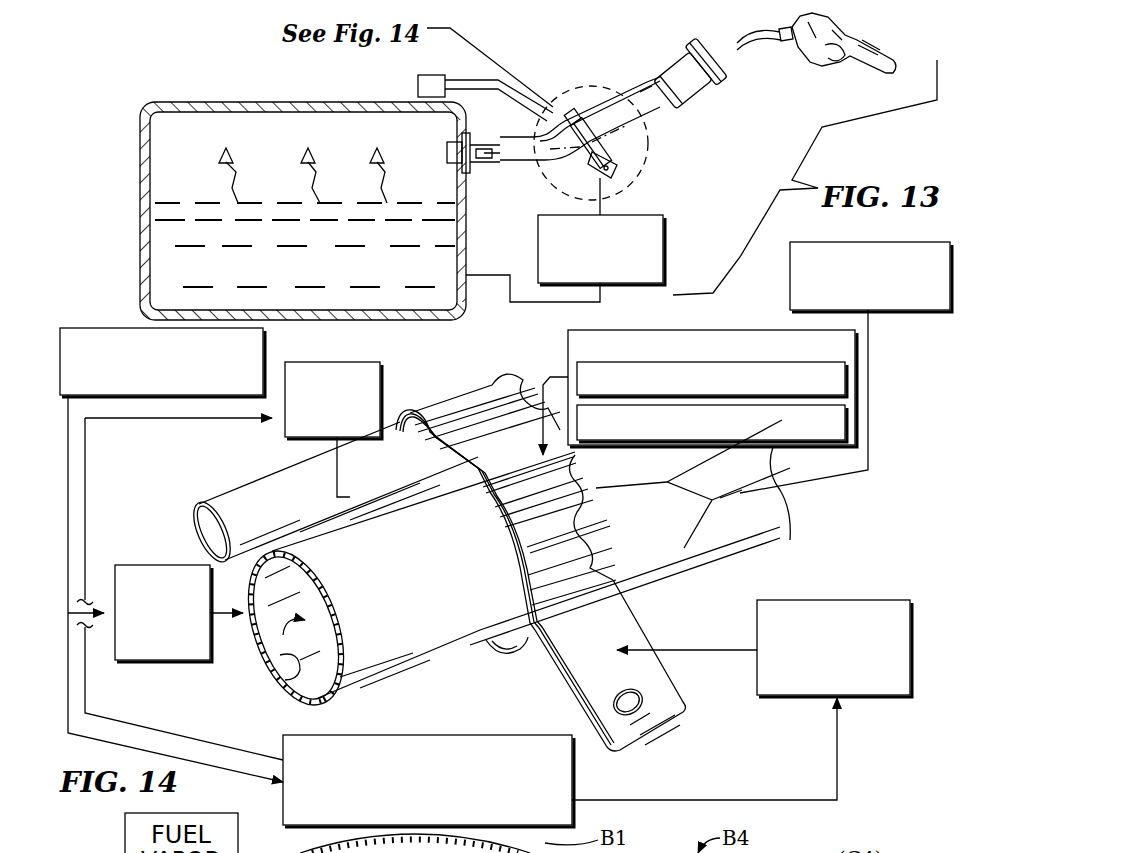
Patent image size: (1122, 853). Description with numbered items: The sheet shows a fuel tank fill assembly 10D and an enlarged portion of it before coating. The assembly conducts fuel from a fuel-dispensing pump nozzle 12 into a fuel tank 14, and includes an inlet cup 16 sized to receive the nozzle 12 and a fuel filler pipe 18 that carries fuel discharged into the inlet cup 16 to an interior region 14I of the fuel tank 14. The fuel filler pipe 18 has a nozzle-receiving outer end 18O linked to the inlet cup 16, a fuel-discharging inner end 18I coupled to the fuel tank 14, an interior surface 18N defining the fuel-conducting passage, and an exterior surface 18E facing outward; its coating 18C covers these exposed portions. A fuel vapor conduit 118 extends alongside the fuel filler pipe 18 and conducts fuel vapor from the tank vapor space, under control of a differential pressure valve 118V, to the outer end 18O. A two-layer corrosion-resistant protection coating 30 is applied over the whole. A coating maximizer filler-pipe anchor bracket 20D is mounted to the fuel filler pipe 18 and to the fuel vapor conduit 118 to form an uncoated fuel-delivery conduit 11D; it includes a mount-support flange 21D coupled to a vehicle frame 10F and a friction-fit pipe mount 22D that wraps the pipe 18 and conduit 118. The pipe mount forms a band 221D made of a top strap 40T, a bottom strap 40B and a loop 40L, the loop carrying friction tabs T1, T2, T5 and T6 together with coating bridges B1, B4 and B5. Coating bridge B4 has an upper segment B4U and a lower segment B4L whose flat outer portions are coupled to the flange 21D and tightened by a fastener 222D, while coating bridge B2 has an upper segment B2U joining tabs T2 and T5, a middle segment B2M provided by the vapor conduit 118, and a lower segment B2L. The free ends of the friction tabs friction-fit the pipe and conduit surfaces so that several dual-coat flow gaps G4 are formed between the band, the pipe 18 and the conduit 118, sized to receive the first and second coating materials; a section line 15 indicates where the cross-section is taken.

In FIG. 13, the fuel tank fill assembly 10D is at (628, 14).
In FIG. 13, the vehicle frame 10F is at (537, 235).
In FIG. 14, the uncoated fuel-delivery conduit 11D is at (105, 328).
In FIG. 13, the fuel-dispensing pump nozzle 12 is at (863, 25).
In FIG. 13, the fuel tank 14 is at (272, 102).
In FIG. 13, the interior region of fuel tank 14I is at (205, 160).
In FIG. 14, the section line 15 is at (477, 360).
In FIG. 13, the inlet cup 16 is at (650, 65).
In FIG. 13, the fuel filler pipe 18 is at (632, 88).
In FIG. 14, the fuel filler pipe 18 is at (157, 565).
In FIG. 14, the filler pipe coating 18C is at (323, 622).
In FIG. 14, the exterior surface of fuel filler pipe 18E is at (432, 643).
In FIG. 13, the fuel-discharging inner end 18I is at (490, 140).
In FIG. 14, the interior surface of fuel filler pipe 18N is at (278, 683).
In FIG. 13, the nozzle-receiving outer end 18O is at (663, 108).
In FIG. 13, the coating maximizer filler-pipe anchor bracket 20D is at (567, 97).
In FIG. 14, the coating maximizer filler-pipe anchor bracket 20D is at (445, 735).
In FIG. 14, the mount-support flange 21D is at (832, 600).
In FIG. 14, the friction-fit pipe mount 22D is at (312, 362).
In FIG. 13, the two-layer corrosion-resistant protection coating 30 is at (675, 52).
In FIG. 14, the bottom strap 40B is at (562, 688).
In FIG. 14, the loop 40L is at (487, 375).
In FIG. 14, the top strap 40T is at (525, 626).
In FIG. 14, the fuel vapor conduit 118 is at (245, 485).
In FIG. 13, the differential pressure valve 118V is at (418, 88).
In FIG. 14, the band 221D is at (733, 330).
In FIG. 14, the fastener 222D is at (622, 672).
In FIG. 14, the first coating bridge B1 is at (555, 546).
In FIG. 14, the lower segment of coating bridge B2 B2L is at (420, 535).
In FIG. 14, the middle segment of coating bridge B2 B2M is at (345, 488).
In FIG. 14, the upper segment of coating bridge B2 B2U is at (527, 465).
In FIG. 14, the fourth coating bridge B4 is at (707, 607).
In FIG. 14, the lower segment of coating bridge B4 B4L is at (620, 640).
In FIG. 14, the upper segment of coating bridge B4 B4U is at (632, 610).
In FIG. 14, the fifth coating bridge B5 is at (470, 421).
In FIG. 14, the first friction tab T1 is at (645, 470).
In FIG. 14, the second friction tab T2 is at (460, 507).
In FIG. 14, the fifth friction tab T5 is at (490, 427).
In FIG. 14, the sixth friction tab T6 is at (404, 445).
In FIG. 14, the dual-coat flow gap G4 is at (898, 312).